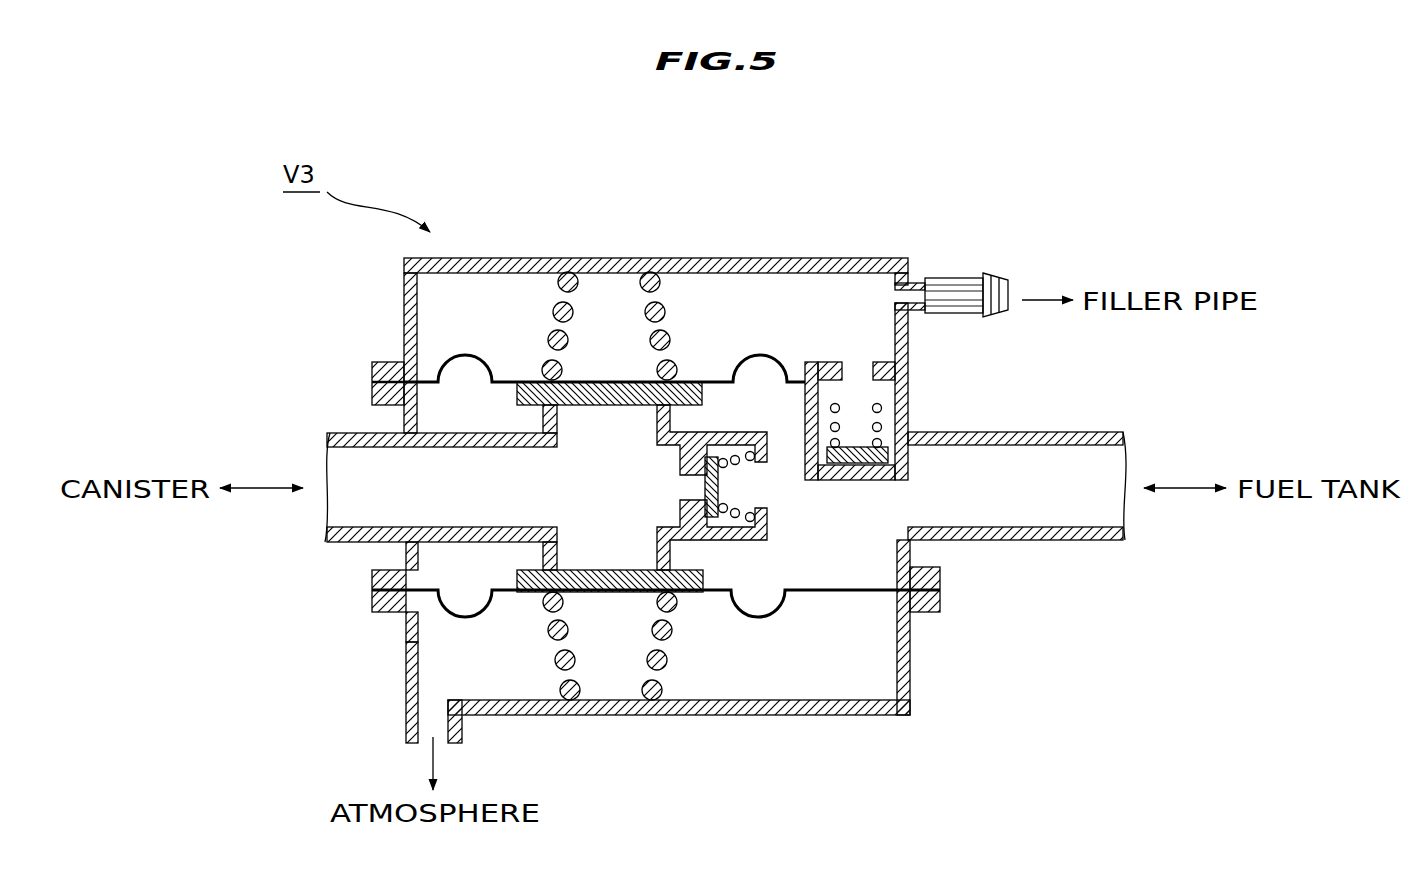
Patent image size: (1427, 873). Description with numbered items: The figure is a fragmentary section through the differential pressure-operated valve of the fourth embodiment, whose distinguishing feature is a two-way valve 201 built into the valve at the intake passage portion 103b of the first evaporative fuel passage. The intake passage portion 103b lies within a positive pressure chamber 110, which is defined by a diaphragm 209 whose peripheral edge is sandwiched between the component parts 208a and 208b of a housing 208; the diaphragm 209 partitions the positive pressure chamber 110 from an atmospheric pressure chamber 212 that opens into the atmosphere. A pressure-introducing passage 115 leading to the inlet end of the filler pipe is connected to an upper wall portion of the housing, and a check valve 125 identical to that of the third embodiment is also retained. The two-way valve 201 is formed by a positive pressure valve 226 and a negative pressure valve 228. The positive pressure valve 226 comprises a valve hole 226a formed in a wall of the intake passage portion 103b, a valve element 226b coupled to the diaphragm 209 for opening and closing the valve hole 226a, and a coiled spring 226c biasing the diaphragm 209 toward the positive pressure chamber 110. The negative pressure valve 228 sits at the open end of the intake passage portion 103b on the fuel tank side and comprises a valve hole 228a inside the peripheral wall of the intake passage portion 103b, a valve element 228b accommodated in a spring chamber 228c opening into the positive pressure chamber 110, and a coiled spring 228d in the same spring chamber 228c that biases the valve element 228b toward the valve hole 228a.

The intake passage portion 103b is at (450, 432).
The positive pressure chamber 110 is at (435, 553).
The pressure-introducing passage 115 is at (947, 278).
The check valve 125 is at (857, 373).
The two-way valve 201 is at (727, 487).
The housing 208 is at (620, 660).
The component part of housing 208a is at (373, 580).
The component part of housing 208b is at (403, 683).
The diaphragm 209 is at (863, 592).
The atmospheric pressure chamber 212 is at (822, 653).
The positive pressure valve 226 is at (542, 620).
The valve hole 226a is at (560, 572).
The valve element 226b is at (613, 570).
The coiled spring 226c is at (672, 630).
The negative pressure valve 228 is at (727, 487).
The valve hole 228a is at (672, 433).
The valve element 228b is at (727, 542).
The spring chamber 228c is at (728, 487).
The valve spring 228d is at (737, 463).